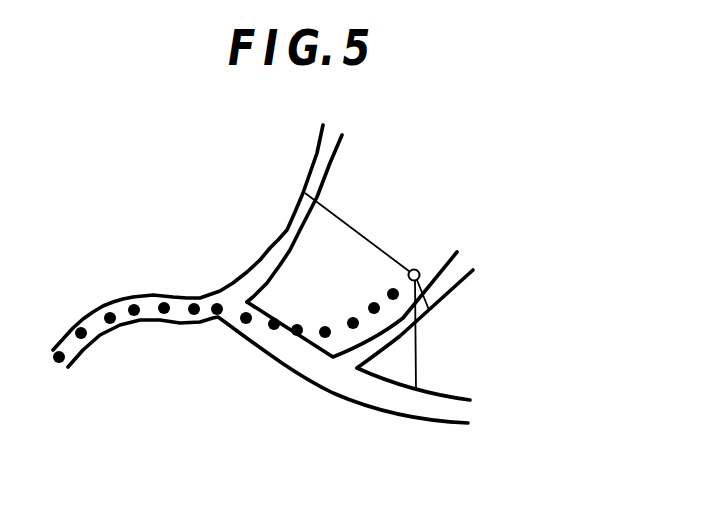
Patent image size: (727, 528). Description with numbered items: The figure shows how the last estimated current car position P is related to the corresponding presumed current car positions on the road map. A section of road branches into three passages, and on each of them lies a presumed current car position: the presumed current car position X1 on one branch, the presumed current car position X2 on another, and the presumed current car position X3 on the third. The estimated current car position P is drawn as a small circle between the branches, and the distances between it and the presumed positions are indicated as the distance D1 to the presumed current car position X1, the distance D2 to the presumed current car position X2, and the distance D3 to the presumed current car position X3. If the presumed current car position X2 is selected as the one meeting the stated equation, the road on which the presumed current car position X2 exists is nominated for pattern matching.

The presumed current car position X1 is at (302, 187).
The presumed current car position X2 is at (429, 313).
The presumed current car position X3 is at (417, 391).
The estimated current car position P is at (413, 269).
The distance D1 is at (357, 232).
The distance D2 is at (424, 290).
The distance D3 is at (434, 336).